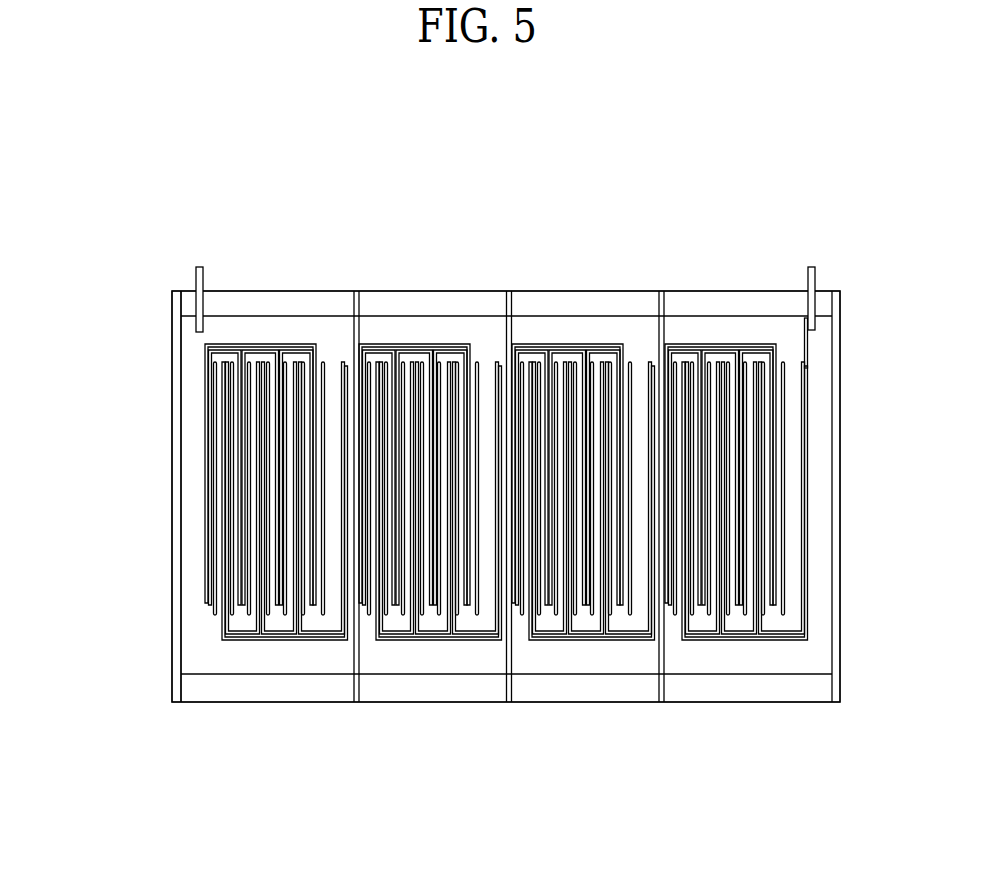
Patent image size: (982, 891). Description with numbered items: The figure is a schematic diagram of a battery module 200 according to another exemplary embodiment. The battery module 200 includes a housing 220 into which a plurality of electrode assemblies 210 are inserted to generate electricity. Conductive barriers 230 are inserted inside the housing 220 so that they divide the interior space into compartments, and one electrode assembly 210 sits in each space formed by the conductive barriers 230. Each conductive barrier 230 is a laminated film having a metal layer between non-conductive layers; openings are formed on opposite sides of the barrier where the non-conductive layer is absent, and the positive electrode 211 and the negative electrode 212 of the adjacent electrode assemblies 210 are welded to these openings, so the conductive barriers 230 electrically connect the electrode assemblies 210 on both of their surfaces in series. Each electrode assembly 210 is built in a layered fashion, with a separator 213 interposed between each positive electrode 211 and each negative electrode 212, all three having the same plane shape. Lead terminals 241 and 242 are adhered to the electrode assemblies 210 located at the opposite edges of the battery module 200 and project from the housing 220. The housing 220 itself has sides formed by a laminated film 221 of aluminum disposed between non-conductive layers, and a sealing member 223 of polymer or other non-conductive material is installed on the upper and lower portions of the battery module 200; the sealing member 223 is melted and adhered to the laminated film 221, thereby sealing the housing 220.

The battery module 200 is at (668, 186).
The electrode assembly 210 is at (454, 543).
The positive electrode 211 is at (203, 516).
The negative electrode 212 is at (222, 634).
The separator 213 is at (213, 600).
The housing 220 is at (133, 360).
The laminated film 221 is at (176, 637).
The sealing member 223 is at (275, 303).
The conductive barrier 230 is at (360, 300).
The lead terminal 241 is at (810, 266).
The lead terminal 242 is at (203, 266).